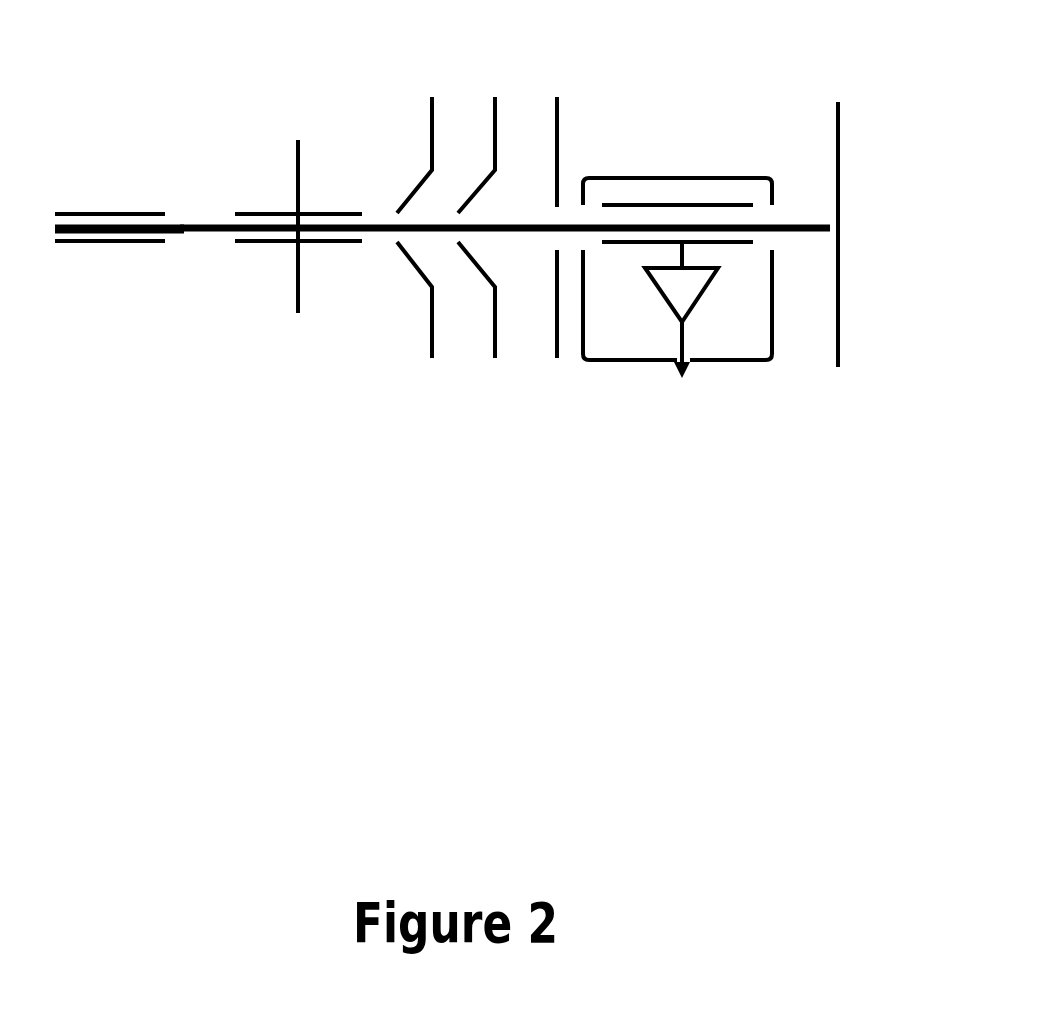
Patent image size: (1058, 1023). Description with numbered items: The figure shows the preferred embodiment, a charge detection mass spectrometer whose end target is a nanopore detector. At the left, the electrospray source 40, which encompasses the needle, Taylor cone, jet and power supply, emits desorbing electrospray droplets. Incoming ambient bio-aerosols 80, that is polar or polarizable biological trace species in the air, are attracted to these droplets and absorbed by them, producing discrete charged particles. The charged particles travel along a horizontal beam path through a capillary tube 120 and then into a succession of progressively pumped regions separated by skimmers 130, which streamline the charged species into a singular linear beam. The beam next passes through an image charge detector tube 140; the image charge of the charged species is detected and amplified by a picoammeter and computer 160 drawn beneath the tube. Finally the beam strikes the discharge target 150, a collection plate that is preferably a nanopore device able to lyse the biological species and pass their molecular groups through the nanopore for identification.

The electrospray source 40 is at (150, 138).
The ambient bio-aerosols 80 is at (196, 249).
The capillary tube 120 is at (296, 281).
The skimmers 130 is at (477, 187).
The image charge detector tube 140 is at (677, 213).
The discharge target 150 is at (845, 217).
The picoammeter and computer 160 is at (825, 367).